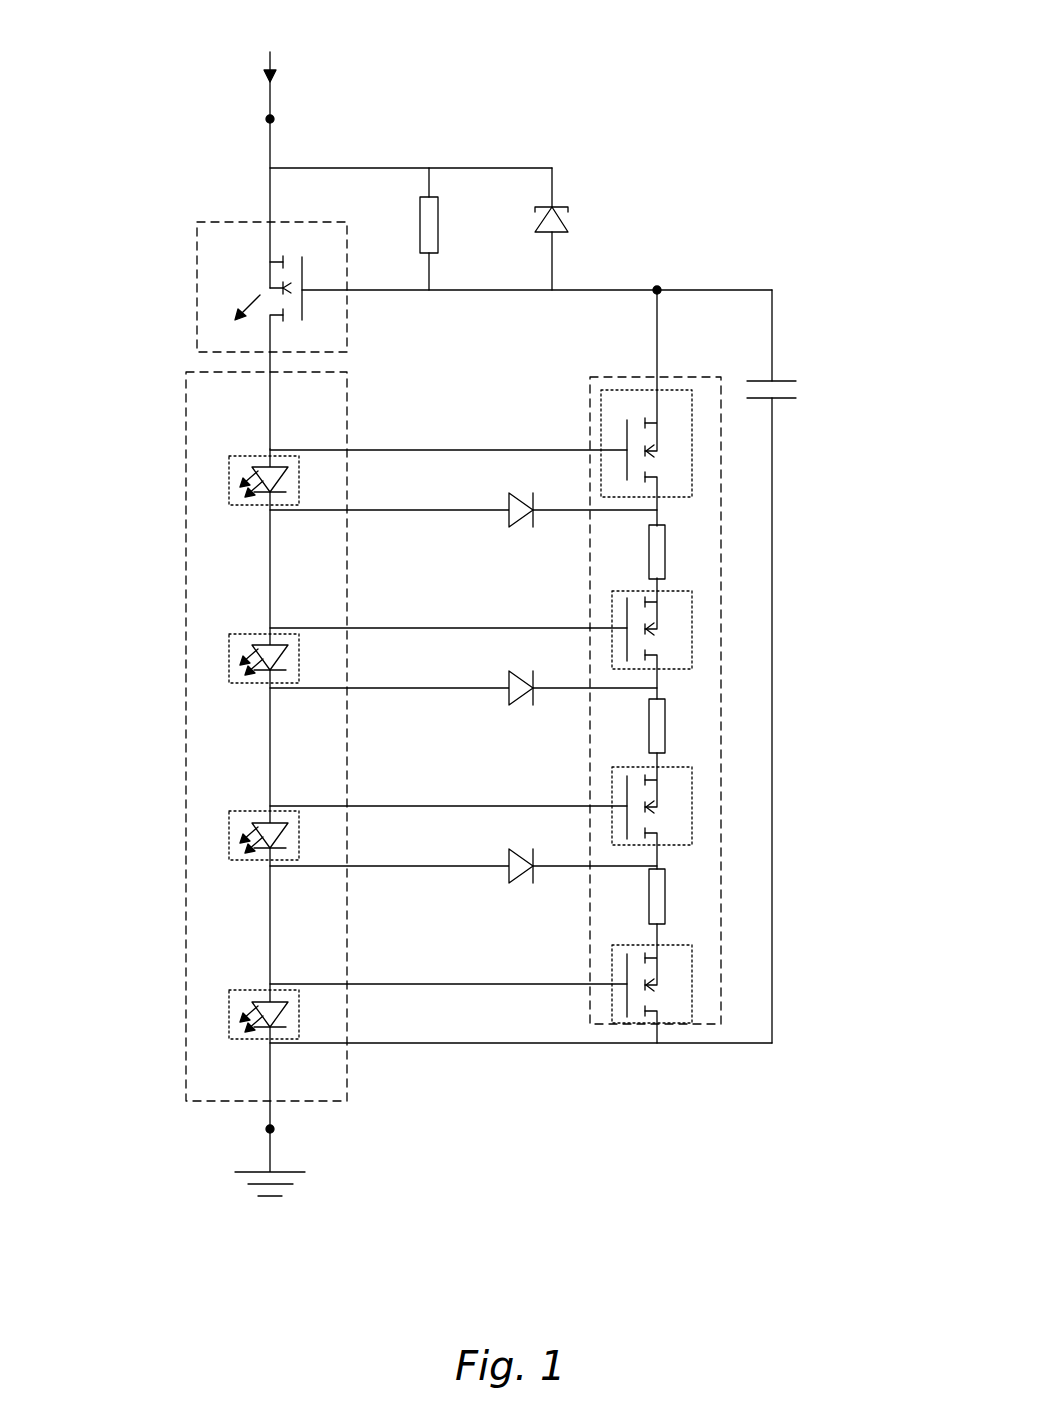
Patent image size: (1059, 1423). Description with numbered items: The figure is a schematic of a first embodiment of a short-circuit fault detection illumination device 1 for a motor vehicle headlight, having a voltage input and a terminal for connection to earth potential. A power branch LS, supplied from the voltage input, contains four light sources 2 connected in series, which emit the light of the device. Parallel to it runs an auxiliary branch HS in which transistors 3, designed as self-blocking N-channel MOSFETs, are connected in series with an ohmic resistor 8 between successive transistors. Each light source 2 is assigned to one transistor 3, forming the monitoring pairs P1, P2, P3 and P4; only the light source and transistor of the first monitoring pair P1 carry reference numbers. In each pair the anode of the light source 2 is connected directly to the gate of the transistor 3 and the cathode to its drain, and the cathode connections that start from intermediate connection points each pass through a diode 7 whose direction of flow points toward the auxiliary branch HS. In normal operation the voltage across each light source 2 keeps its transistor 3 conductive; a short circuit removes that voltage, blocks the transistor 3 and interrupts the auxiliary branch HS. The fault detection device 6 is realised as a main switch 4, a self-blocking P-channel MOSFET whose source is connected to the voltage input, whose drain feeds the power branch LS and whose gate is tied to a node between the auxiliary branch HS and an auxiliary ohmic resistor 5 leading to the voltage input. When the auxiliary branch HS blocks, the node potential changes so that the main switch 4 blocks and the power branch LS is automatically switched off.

The short-circuit fault detection illumination device 1 is at (659, 146).
The light source 2 is at (263, 466).
The transistor 3 is at (657, 437).
The main switch 4 is at (268, 282).
The auxiliary ohmic resistor 5 is at (420, 220).
The fault detection device 6 is at (197, 268).
The diode 7 is at (509, 503).
The ohmic resistor 8 is at (665, 553).
The power branch LS is at (186, 567).
The auxiliary branch HS is at (722, 670).
The first monitoring pair P1 is at (600, 413).
The second monitoring pair P2 is at (612, 615).
The third monitoring pair P3 is at (610, 802).
The fourth monitoring pair P4 is at (612, 970).